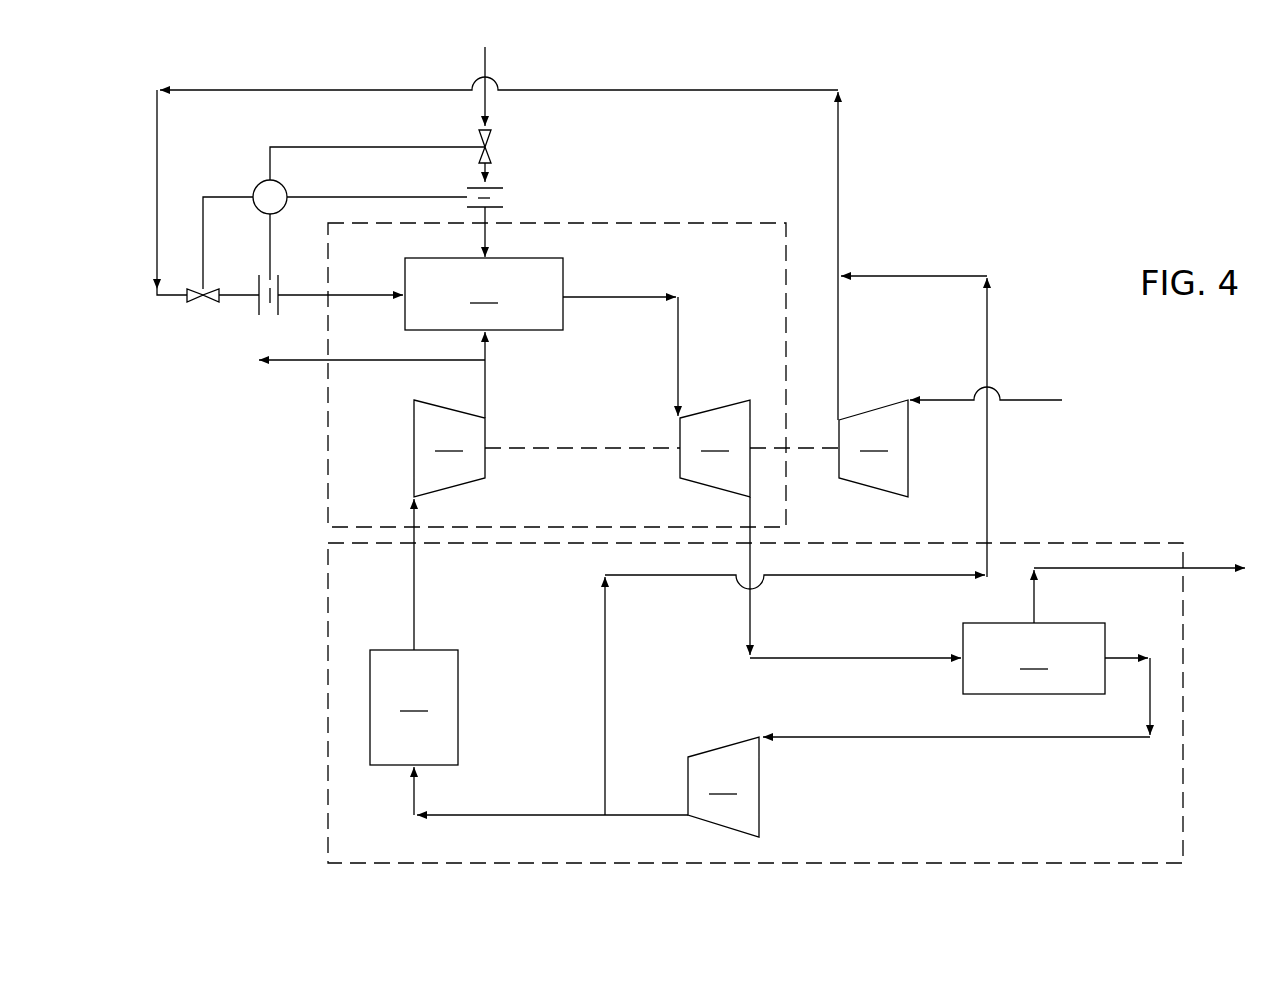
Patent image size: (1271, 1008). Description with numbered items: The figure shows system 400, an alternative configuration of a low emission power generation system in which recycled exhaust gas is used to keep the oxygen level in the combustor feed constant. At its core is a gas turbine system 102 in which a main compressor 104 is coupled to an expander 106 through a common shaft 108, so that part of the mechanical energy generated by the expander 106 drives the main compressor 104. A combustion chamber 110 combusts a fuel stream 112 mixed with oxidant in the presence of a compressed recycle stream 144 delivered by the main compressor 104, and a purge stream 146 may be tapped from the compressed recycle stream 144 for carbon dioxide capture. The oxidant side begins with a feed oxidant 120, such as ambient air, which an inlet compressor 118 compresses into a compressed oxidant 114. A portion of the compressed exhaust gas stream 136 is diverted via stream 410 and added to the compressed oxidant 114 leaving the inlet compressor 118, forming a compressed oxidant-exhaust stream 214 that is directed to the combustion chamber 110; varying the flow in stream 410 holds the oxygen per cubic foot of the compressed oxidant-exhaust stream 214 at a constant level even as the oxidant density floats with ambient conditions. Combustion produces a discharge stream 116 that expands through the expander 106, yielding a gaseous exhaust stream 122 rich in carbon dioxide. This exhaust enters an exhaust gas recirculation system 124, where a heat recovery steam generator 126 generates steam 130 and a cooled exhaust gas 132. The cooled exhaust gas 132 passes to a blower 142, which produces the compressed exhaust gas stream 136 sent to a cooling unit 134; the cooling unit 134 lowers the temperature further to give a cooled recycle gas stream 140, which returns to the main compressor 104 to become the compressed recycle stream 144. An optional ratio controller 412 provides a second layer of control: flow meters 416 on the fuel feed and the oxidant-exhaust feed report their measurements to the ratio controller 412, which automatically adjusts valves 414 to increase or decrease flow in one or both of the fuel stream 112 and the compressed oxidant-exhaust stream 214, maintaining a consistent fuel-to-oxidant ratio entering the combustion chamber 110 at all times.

The system 400 is at (1016, 161).
The gas turbine system 102 is at (735, 211).
The main compressor 104 is at (449, 448).
The expander 106 is at (715, 448).
The common shaft 108 is at (577, 446).
The combustion chamber 110 is at (484, 294).
The fuel stream 112 is at (485, 62).
The compressed oxidant 114 is at (838, 318).
The discharge stream 116 is at (600, 298).
The inlet compressor 118 is at (873, 448).
The feed oxidant 120 is at (1033, 396).
The gaseous exhaust stream 122 is at (843, 657).
The exhaust gas recirculation system 124 is at (315, 662).
The heat recovery steam generator 126 is at (1034, 658).
The steam 130 is at (1214, 563).
The cooled exhaust gas 132 is at (1008, 740).
The cooling unit 134 is at (414, 707).
The compressed exhaust gas stream 136 is at (516, 813).
The cooled recycle gas stream 140 is at (414, 612).
The blower 142 is at (723, 787).
The compressed recycle stream 144 is at (485, 378).
The purge stream 146 is at (293, 365).
The compressed oxidant-exhaust stream 214 is at (838, 137).
The stream 410 is at (908, 273).
The ratio controller 412 is at (236, 177).
The valves 414 is at (490, 135).
The flow meters 416 is at (490, 186).